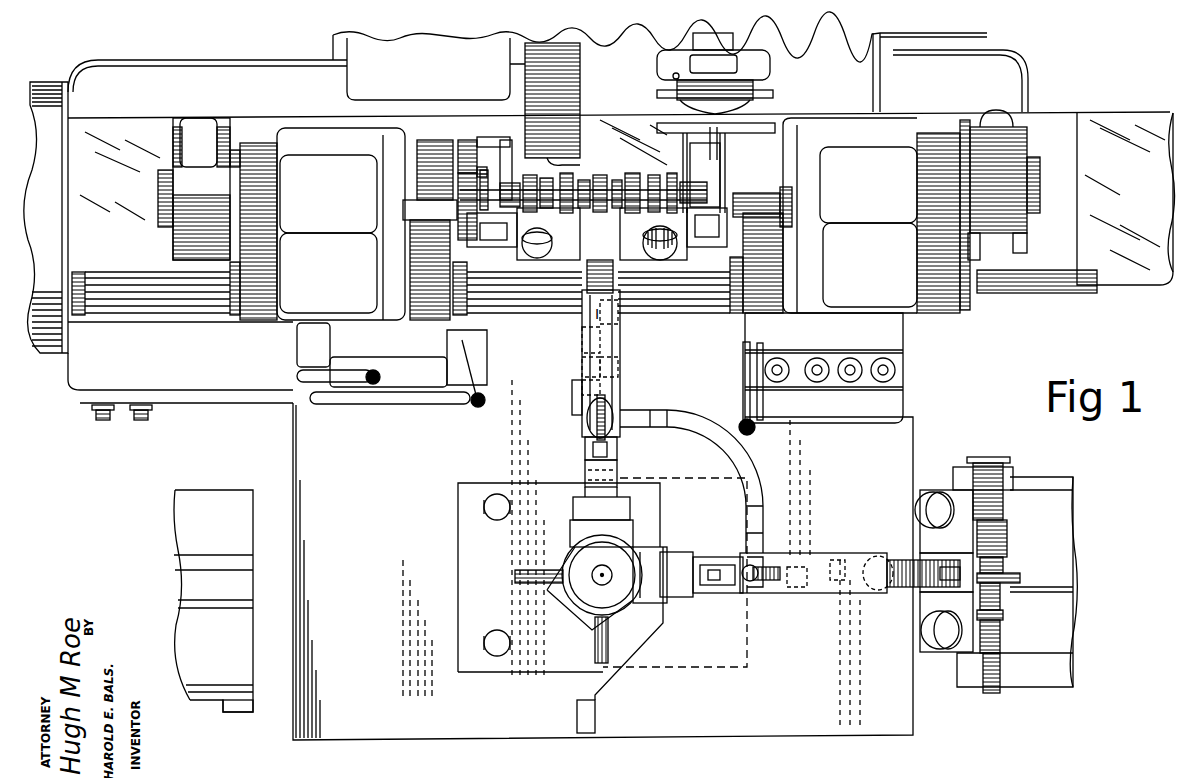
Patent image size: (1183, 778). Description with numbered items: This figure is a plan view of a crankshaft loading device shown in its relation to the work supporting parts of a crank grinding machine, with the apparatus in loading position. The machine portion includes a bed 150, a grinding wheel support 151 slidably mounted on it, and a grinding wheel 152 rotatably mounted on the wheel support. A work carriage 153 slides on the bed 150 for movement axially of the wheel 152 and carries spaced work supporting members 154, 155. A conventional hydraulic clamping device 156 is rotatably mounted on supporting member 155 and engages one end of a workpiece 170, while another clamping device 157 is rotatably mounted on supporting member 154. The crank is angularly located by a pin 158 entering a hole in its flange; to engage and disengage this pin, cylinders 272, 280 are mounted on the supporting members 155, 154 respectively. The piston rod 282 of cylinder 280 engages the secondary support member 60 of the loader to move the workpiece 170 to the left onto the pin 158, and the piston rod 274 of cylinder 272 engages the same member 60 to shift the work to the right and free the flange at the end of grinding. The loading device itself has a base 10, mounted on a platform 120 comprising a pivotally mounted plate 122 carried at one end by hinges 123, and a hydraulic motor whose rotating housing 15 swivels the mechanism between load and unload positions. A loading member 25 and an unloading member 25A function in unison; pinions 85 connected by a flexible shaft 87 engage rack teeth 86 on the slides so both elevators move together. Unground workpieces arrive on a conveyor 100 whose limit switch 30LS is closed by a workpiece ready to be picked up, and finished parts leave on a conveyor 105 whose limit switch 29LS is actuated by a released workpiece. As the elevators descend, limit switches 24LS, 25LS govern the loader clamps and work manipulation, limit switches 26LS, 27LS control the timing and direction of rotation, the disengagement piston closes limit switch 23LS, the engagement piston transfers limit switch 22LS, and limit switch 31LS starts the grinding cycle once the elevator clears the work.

The base 10 is at (573, 653).
The hydraulic motor housing 15 is at (577, 560).
The loading member 25 is at (813, 600).
The unloading member 25A is at (617, 358).
The limit switch 22LS is at (633, 314).
The limit switch 23LS is at (493, 230).
The limit switch 24LS is at (600, 337).
The limit switch 25LS is at (903, 520).
The limit switch 26LS is at (787, 596).
The limit switch 27LS is at (613, 370).
The limit switch 29LS is at (1013, 477).
The limit switch 30LS is at (238, 702).
The limit switch 31LS is at (582, 384).
The secondary support member 60 is at (796, 430).
The pinion 85 is at (587, 428).
The rack teeth 86 is at (577, 292).
The flexible shaft 87 is at (715, 428).
The conveyor 100 is at (222, 493).
The conveyor 105 is at (1028, 687).
The platform 120 is at (480, 728).
The pivotally mounted plate 122 is at (763, 713).
The hinges 123 is at (577, 405).
The bed 150 is at (1003, 53).
The grinding wheel support 151 is at (436, 69).
The grinding wheel 152 is at (578, 163).
The work carriage 153 is at (1053, 117).
The work supporting member 154 is at (850, 215).
The work supporting member 155 is at (341, 224).
The hydraulic clamping device 156 is at (480, 146).
The clamping device 157 is at (705, 232).
The locator pin 158 is at (483, 162).
The workpiece 170 is at (605, 157).
The disengagement cylinder 272 is at (405, 232).
The piston rod 274 is at (447, 242).
The engagement cylinder 280 is at (783, 227).
The piston rod 282 is at (740, 242).